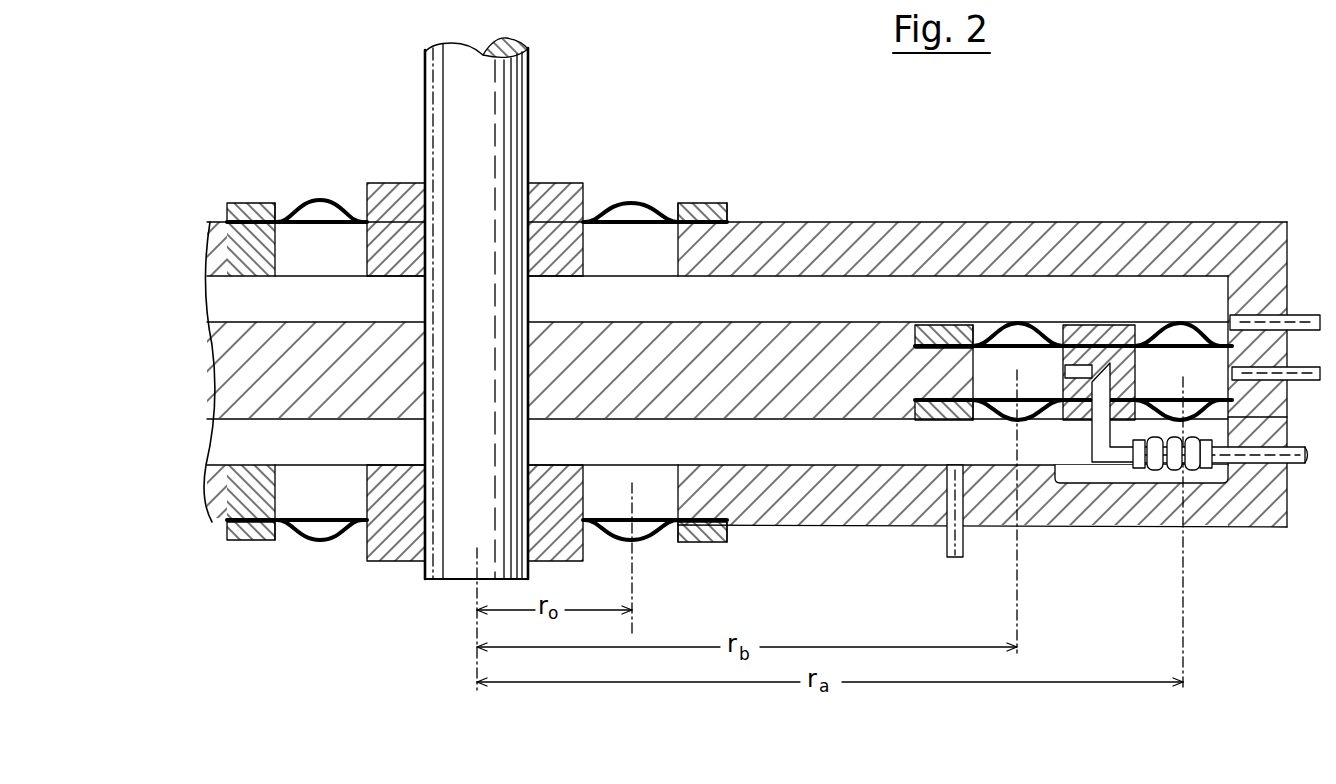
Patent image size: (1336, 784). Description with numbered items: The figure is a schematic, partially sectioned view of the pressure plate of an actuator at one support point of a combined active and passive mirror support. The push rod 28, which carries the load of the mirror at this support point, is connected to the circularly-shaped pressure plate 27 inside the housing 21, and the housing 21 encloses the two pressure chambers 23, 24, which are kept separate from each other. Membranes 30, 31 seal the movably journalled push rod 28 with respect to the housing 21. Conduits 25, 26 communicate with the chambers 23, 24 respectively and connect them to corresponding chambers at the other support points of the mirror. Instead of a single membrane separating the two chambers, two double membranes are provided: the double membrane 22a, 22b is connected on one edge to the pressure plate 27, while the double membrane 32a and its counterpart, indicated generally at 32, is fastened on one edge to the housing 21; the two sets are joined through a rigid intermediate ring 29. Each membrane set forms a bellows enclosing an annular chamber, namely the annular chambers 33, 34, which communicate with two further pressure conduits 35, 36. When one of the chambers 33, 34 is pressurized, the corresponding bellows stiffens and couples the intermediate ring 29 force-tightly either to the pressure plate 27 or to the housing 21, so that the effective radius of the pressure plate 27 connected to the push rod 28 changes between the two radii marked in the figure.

The housing 21 is at (845, 222).
The double membrane 22a is at (1010, 323).
The double membrane 22b is at (1037, 420).
The pressure chamber 23 is at (742, 310).
The pressure chamber 24 is at (740, 455).
The conduit 25 is at (1288, 306).
The conduit 26 is at (948, 543).
The pressure plate 27 is at (820, 410).
The push rod 28 is at (517, 150).
The rigid intermediate ring 29 is at (1103, 363).
The membrane 30 is at (626, 206).
The membrane 31 is at (642, 545).
The outer sealing ring 32 is at (1205, 420).
The double membrane 32a is at (1175, 323).
The annular chamber 33 is at (1014, 382).
The annular chamber 34 is at (1174, 382).
The pressure conduit 35 is at (1298, 468).
The pressure conduit 36 is at (1305, 376).